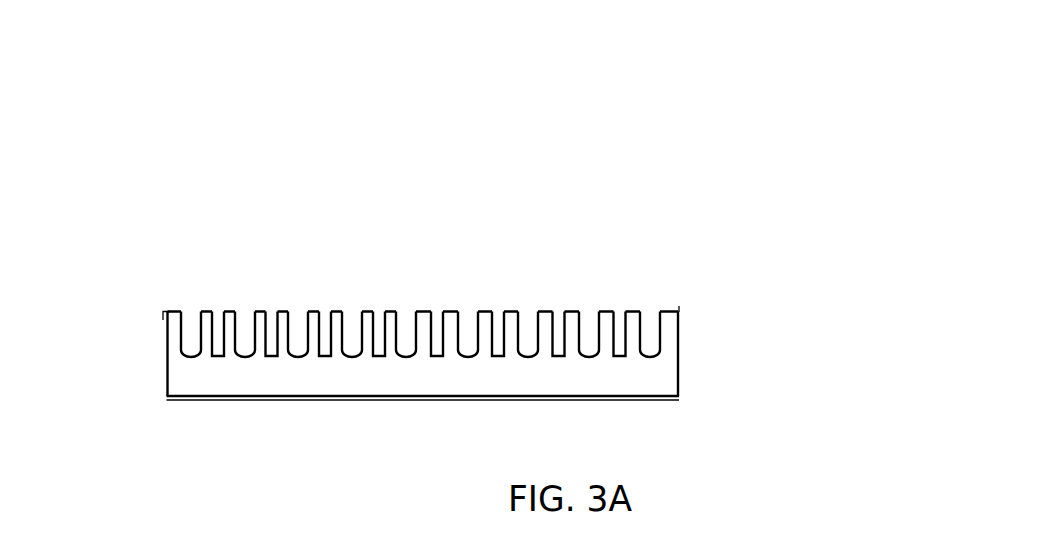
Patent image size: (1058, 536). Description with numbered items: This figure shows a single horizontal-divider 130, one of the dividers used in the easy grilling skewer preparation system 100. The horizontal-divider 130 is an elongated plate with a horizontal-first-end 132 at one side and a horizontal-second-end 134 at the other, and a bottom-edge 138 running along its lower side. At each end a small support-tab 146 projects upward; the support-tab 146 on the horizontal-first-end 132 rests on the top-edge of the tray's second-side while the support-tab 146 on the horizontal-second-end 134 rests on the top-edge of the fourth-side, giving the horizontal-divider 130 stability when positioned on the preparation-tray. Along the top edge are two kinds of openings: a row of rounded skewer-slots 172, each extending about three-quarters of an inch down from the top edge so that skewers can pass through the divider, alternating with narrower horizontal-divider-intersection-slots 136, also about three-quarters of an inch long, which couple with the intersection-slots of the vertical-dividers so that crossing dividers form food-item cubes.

The easy grilling skewer preparation system 100 is at (729, 82).
The horizontal-divider 130 is at (682, 383).
The horizontal-first-end 132 is at (166, 352).
The horizontal-second-end 134 is at (682, 338).
The horizontal-divider-intersection-slot 136 is at (219, 316).
The bottom-edge 138 is at (653, 402).
The support-tab 146 is at (160, 305).
The skewer-slot 172 is at (650, 362).